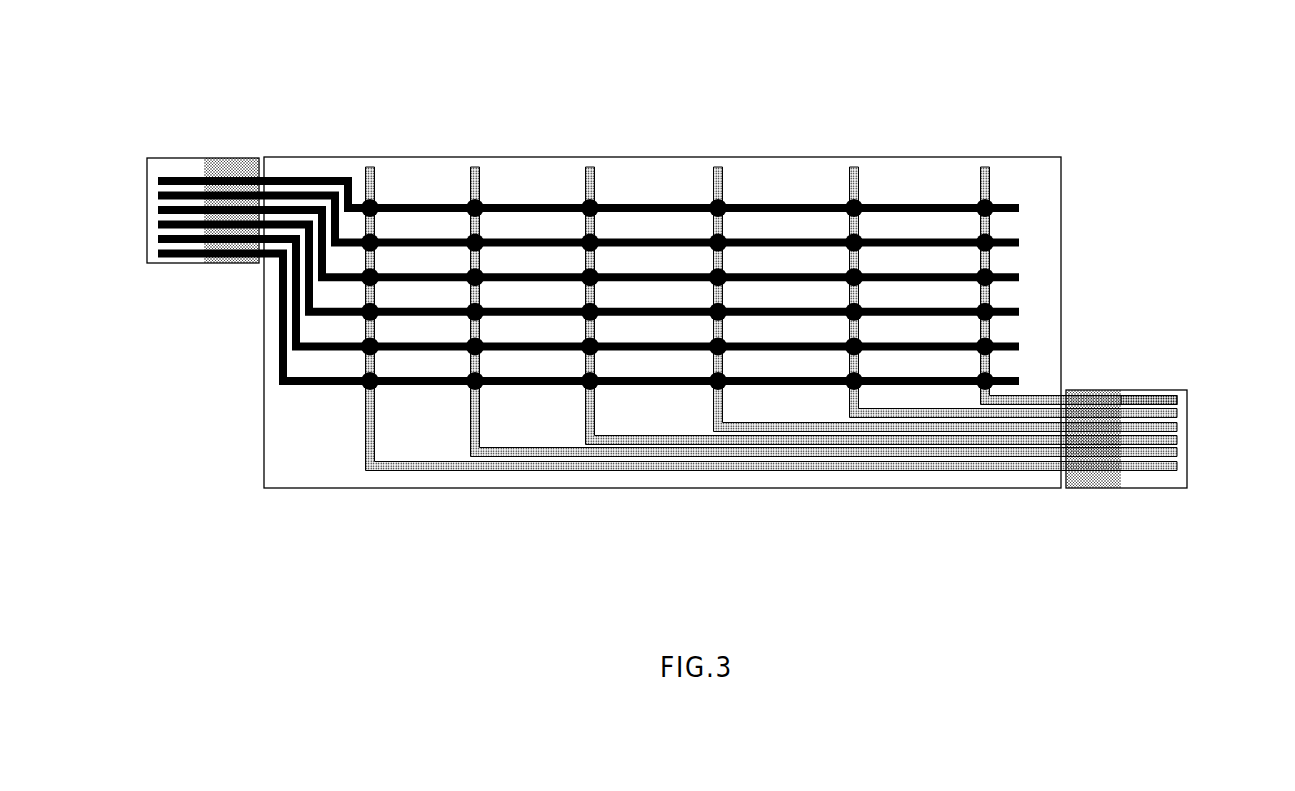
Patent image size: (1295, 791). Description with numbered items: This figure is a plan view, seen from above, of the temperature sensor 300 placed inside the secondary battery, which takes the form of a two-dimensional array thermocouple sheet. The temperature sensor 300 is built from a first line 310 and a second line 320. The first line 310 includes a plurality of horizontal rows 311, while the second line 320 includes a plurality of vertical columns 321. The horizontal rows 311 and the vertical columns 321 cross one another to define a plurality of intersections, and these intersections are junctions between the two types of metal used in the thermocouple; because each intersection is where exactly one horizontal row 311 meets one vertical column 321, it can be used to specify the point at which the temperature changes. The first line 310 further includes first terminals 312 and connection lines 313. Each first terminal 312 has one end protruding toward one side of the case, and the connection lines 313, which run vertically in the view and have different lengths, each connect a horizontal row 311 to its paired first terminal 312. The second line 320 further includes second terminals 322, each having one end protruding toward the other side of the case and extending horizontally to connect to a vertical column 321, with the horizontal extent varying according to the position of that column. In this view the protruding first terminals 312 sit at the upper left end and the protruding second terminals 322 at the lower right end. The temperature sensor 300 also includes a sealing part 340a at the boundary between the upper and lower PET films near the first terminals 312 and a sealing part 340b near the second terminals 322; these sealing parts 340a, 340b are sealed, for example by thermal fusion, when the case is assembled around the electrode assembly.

The temperature sensor 300 is at (736, 100).
The first line 310 is at (143, 178).
The horizontal rows 311 is at (300, 385).
The first terminals 312 is at (172, 263).
The connection lines 313 is at (279, 358).
The second line 320 is at (1194, 396).
The vertical columns 321 is at (990, 368).
The second terminals 322 is at (1162, 400).
The sealing part 340a is at (232, 167).
The sealing part 340b is at (1093, 482).